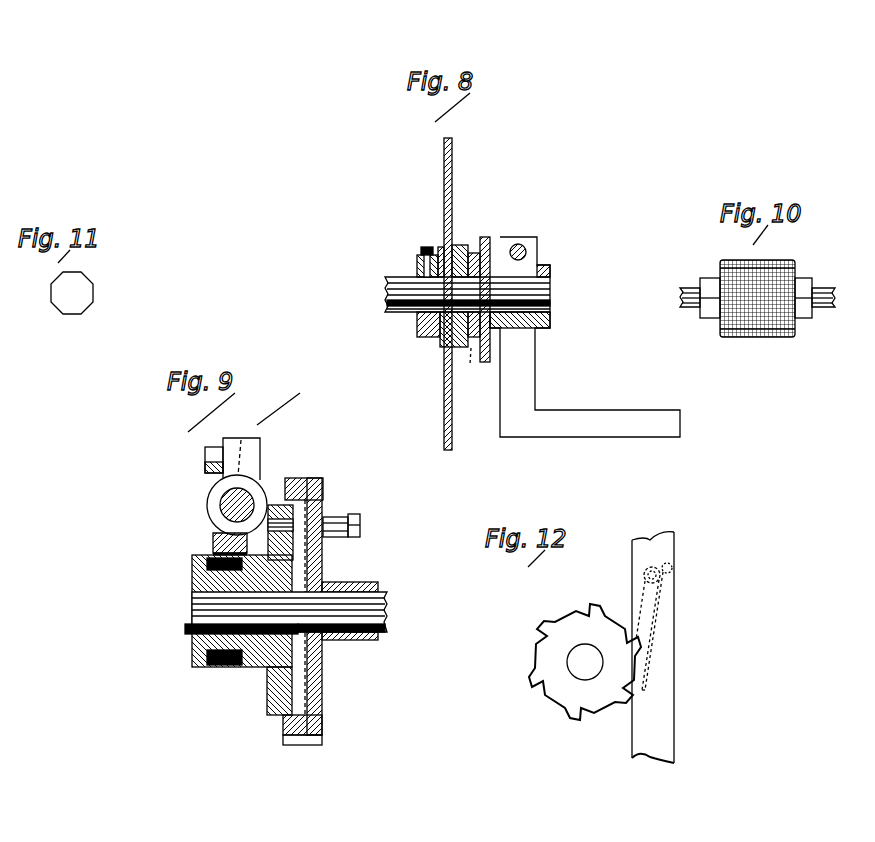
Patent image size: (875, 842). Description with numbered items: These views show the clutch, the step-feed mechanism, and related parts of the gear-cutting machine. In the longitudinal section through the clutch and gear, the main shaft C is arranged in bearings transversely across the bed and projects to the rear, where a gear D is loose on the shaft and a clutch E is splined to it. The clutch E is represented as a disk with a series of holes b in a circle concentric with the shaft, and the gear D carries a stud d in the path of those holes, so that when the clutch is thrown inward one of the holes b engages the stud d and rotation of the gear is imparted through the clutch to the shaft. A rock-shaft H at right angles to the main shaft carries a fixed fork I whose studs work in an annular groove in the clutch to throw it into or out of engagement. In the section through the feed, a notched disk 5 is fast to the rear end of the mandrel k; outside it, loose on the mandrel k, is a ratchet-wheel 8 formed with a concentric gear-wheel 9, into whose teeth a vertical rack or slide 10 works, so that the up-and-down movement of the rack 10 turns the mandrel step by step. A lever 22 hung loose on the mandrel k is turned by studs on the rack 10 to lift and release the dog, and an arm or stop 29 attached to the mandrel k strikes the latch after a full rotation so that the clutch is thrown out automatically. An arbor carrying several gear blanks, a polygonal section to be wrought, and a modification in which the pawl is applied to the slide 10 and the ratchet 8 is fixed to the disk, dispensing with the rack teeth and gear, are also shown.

In FIG. 8, the disk 5 is at (456, 294).
In FIG. 8, the ratchet-wheel 8 is at (466, 251).
In FIG. 12, the ratchet-wheel 8 is at (585, 662).
In FIG. 8, the lever 22 is at (490, 287).
In FIG. 8, the arm or stop 29 is at (585, 337).
In FIG. 8, the gear-wheel 9 is at (467, 368).
In FIG. 8, the holes b is at (467, 294).
In FIG. 9, the holes b is at (280, 505).
In FIG. 12, the vertical rack or slide 10 is at (666, 647).
In FIG. 12, the mandrel k is at (585, 662).
In FIG. 9, the rock-shaft H is at (236, 486).
In FIG. 9, the fork I is at (221, 543).
In FIG. 9, the gear D is at (323, 500).
In FIG. 9, the stud d is at (335, 517).
In FIG. 9, the clutch E is at (242, 635).
In FIG. 9, the main shaft C is at (293, 613).